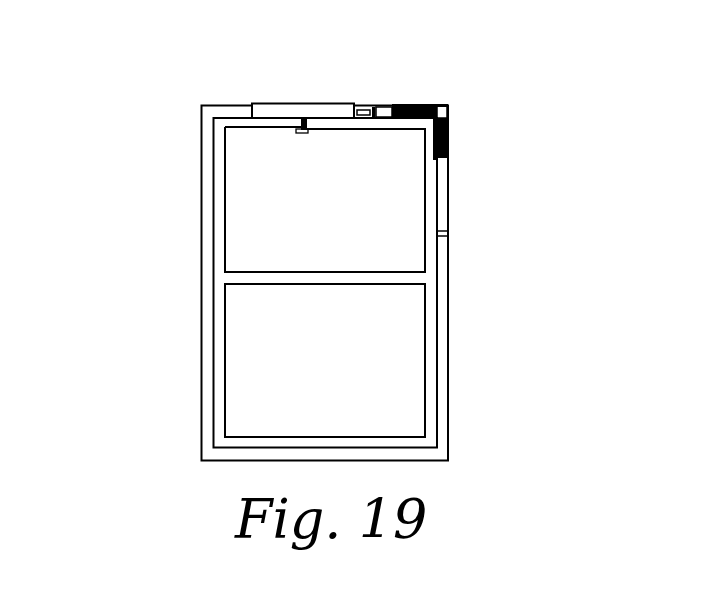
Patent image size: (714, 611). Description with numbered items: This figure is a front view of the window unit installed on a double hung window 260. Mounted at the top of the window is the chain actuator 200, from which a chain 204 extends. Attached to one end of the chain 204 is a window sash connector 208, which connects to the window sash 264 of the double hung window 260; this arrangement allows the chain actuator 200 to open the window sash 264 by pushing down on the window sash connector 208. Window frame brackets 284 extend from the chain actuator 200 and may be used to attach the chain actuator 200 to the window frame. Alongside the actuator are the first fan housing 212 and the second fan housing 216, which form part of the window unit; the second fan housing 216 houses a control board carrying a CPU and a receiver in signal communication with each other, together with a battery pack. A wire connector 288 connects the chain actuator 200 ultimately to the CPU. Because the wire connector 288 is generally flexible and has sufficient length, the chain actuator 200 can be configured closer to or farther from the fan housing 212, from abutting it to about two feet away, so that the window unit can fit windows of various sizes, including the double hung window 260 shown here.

The chain actuator 200 is at (295, 103).
The chain 204 is at (299, 123).
The window sash connector 208 is at (299, 133).
The first fan housing 212 is at (380, 110).
The second fan housing 216 is at (447, 212).
The double hung window 260 is at (447, 395).
The window sash 264 is at (216, 247).
The window frame brackets 284 is at (363, 120).
The wire connector 288 is at (365, 105).